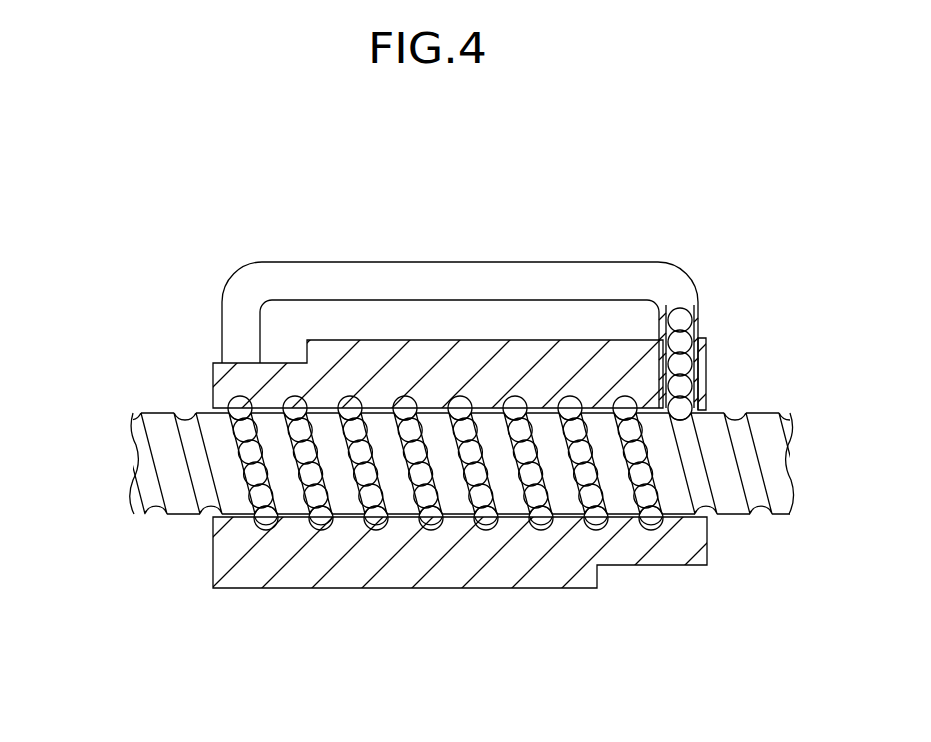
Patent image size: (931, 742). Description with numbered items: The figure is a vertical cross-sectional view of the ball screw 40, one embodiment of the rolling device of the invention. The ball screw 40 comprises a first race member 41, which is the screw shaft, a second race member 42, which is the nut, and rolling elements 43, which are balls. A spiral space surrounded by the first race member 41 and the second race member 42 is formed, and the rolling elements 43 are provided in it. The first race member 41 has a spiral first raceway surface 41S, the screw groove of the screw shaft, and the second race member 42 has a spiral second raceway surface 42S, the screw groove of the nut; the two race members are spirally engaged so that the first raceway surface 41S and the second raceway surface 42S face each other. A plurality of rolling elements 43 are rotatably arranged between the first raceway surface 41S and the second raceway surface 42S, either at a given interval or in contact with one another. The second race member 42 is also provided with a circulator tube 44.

The ball screw 40 is at (381, 420).
The first race member 41 is at (489, 482).
The first raceway surface 41S is at (700, 488).
The second race member 42 is at (460, 514).
The second raceway surface 42S is at (648, 522).
The rolling elements 43 is at (490, 540).
The circulator tube 44 is at (540, 282).